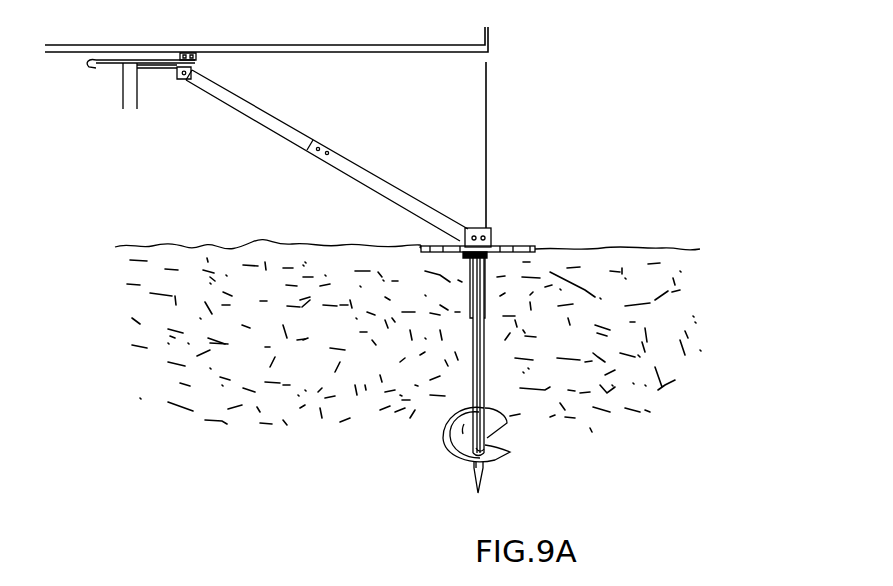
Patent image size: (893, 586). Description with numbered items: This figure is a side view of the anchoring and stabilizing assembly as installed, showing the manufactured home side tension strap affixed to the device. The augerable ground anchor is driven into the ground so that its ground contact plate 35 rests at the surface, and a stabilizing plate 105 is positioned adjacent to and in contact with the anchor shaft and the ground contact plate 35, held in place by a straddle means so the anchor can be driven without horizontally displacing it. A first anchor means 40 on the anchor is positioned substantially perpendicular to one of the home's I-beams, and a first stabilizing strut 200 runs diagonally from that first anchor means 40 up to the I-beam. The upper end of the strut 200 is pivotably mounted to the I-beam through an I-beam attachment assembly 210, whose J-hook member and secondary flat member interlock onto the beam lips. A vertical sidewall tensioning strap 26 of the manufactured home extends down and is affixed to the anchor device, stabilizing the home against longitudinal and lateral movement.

The I-beam attachment assembly 210 is at (201, 57).
The first stabilizing strut 200 is at (363, 170).
The vertical sidewall tensioning strap 26 is at (497, 131).
The first anchor means 40 is at (485, 233).
The ground contact plate 35 is at (513, 247).
The stabilizing plate 105 is at (467, 307).